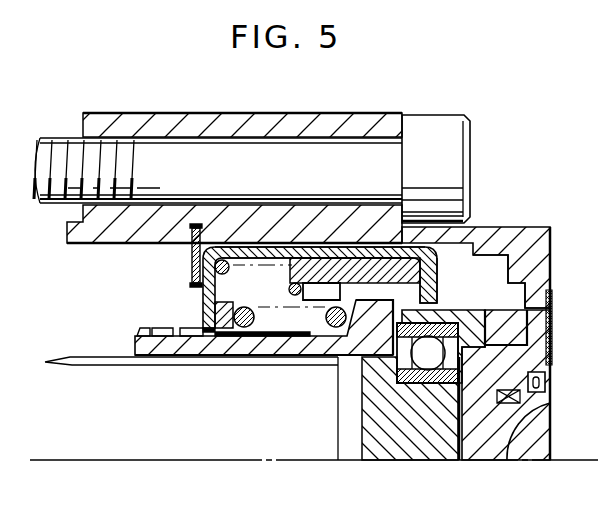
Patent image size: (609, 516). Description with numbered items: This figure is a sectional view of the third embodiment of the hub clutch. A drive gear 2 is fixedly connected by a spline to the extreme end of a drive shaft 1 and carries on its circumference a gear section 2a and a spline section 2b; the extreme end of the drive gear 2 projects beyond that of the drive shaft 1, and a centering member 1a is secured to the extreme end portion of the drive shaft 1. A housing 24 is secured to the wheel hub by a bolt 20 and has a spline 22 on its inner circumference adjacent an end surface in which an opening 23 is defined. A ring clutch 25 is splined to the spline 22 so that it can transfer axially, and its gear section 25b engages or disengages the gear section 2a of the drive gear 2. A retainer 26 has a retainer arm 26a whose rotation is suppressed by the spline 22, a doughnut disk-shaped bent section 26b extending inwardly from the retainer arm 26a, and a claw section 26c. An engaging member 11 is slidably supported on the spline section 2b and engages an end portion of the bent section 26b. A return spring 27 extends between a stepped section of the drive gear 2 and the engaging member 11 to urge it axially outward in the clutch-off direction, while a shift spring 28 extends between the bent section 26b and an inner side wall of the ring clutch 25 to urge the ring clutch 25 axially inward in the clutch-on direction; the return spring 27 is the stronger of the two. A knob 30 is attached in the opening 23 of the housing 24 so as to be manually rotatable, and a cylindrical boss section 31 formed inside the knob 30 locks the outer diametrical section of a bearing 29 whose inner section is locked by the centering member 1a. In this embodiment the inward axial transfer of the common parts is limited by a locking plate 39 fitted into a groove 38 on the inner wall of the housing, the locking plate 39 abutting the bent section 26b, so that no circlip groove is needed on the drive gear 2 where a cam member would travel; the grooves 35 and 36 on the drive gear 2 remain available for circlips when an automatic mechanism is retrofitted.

The drive shaft 1 is at (212, 440).
The centering member 1a is at (390, 437).
The drive gear 2 is at (200, 362).
The gear section 2a is at (377, 302).
The spline section 2b is at (290, 338).
The engaging member 11 is at (214, 340).
The bolt 20 is at (443, 143).
The spline 22 is at (457, 244).
The opening 23 is at (534, 393).
The housing 24 is at (527, 237).
The ring clutch 25 is at (330, 262).
The gear section 25b is at (302, 333).
The retainer 26 is at (420, 218).
The retainer arm 26a is at (290, 257).
The bent section 26b is at (291, 290).
The claw section 26c is at (430, 273).
The return spring 27 is at (243, 327).
The shift spring 28 is at (224, 243).
The bearing 29 is at (432, 354).
The knob 30 is at (495, 425).
The boss section 31 is at (447, 322).
The groove 35 is at (146, 328).
The groove 36 is at (170, 328).
The groove 38 is at (168, 117).
The locking plate 39 is at (193, 252).